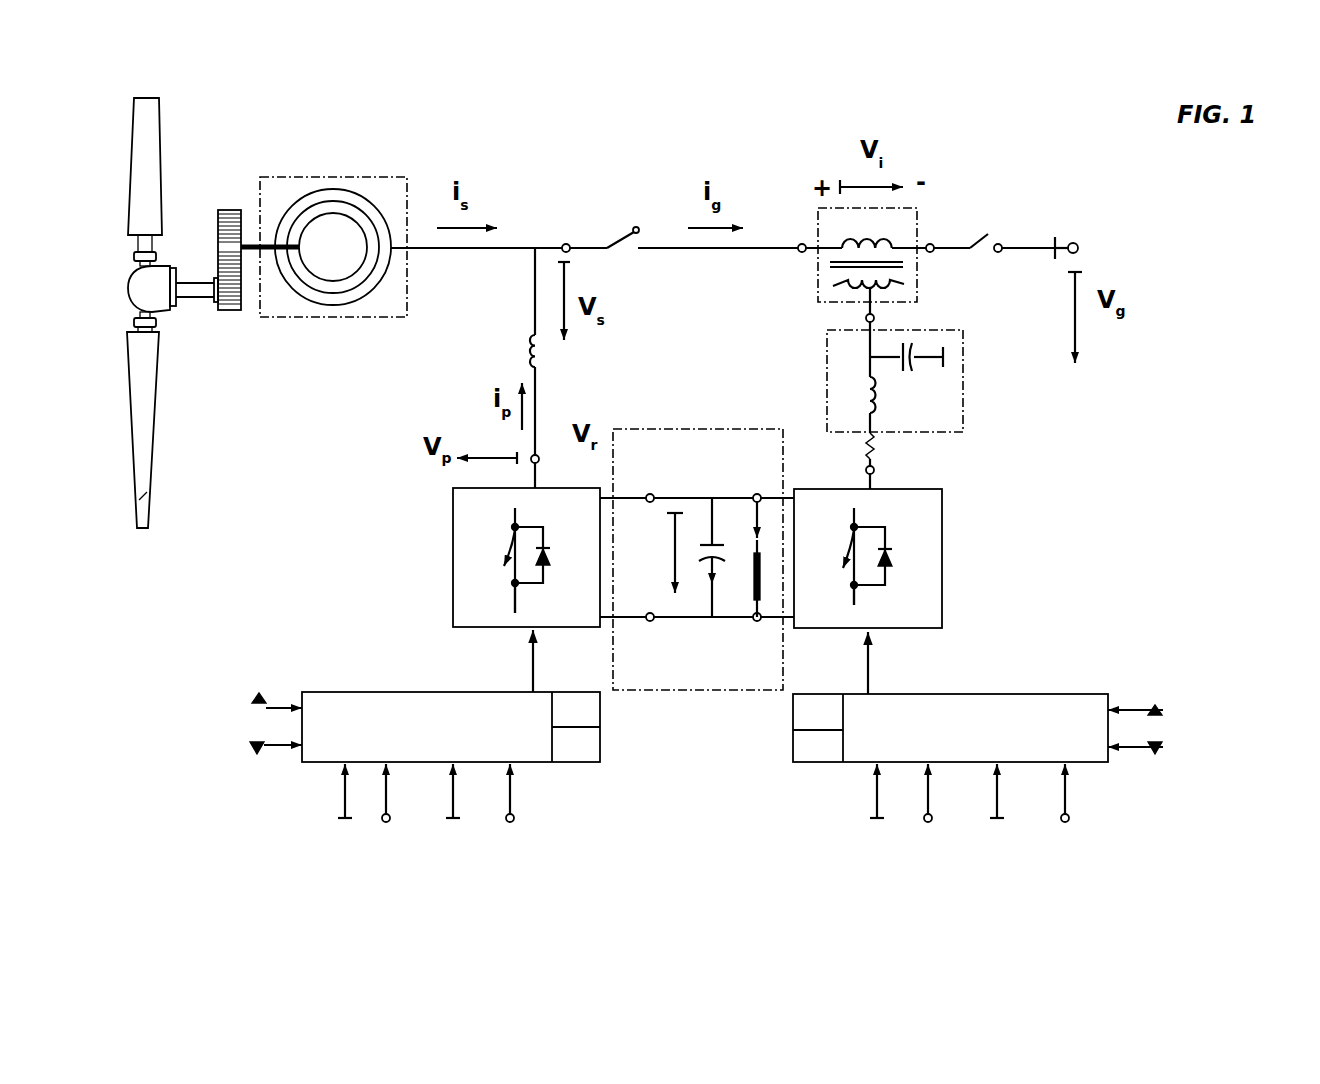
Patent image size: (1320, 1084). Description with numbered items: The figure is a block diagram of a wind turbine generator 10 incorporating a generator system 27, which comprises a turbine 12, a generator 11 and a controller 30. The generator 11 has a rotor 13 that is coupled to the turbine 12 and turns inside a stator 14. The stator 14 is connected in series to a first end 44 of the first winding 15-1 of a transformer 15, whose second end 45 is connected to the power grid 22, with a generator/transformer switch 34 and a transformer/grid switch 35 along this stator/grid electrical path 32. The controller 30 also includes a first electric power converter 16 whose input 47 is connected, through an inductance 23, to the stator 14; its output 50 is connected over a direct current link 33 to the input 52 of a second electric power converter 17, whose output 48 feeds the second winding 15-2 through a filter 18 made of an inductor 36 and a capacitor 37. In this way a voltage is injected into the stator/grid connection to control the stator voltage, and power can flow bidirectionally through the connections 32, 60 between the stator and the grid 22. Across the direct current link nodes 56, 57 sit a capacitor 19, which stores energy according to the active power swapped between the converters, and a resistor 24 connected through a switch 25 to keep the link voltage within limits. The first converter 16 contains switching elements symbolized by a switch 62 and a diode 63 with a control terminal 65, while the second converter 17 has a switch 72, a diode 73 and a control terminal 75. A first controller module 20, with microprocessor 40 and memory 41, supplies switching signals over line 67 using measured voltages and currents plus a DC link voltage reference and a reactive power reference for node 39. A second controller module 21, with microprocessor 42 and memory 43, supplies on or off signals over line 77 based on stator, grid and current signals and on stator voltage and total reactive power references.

The wind turbine generator 10 is at (1168, 203).
The generator 11 is at (355, 229).
The turbine 12 is at (132, 202).
The rotor 13 is at (333, 247).
The stator 14 is at (283, 210).
The transformer 15 is at (871, 251).
The first winding 15-1 is at (888, 240).
The second winding 15-2 is at (835, 287).
The first electric power converter 16 is at (494, 557).
The second electric power converter 17 is at (896, 558).
The filter 18 is at (906, 381).
The capacitor 19 is at (707, 538).
The first controller module 20 is at (447, 759).
The second controller module 21 is at (1004, 759).
The power grid 22 is at (1075, 243).
The inductance 23 is at (532, 362).
The resistor 24 is at (748, 590).
The switch 25 is at (783, 496).
The generator system 27 is at (236, 157).
The controller 30 is at (1173, 837).
The stator/grid electrical path 32 is at (357, 515).
The direct current link 33 is at (707, 578).
The generator/transformer switch 34 is at (630, 228).
The transformer/grid switch 35 is at (987, 233).
The inductor 36 is at (866, 398).
The capacitor 37 is at (918, 367).
The node 39 is at (566, 244).
The microprocessor 40 is at (588, 753).
The memory 41 is at (563, 691).
The microprocessor 42 is at (798, 757).
The memory 43 is at (800, 694).
The first end 44 is at (797, 256).
The second end 45 is at (933, 255).
The input 47 is at (538, 457).
The output 48 is at (876, 472).
The output 50 is at (650, 494).
The input 52 is at (757, 494).
The direct current link node 56 is at (752, 496).
The direct current link node 57 is at (670, 621).
The connection 60 is at (1038, 525).
The switch 62 is at (506, 553).
The diode 63 is at (572, 565).
The control terminal 65 is at (520, 607).
The line 67 is at (532, 663).
The switch 72 is at (850, 556).
The diode 73 is at (915, 577).
The control terminal 75 is at (857, 602).
The line 77 is at (870, 663).